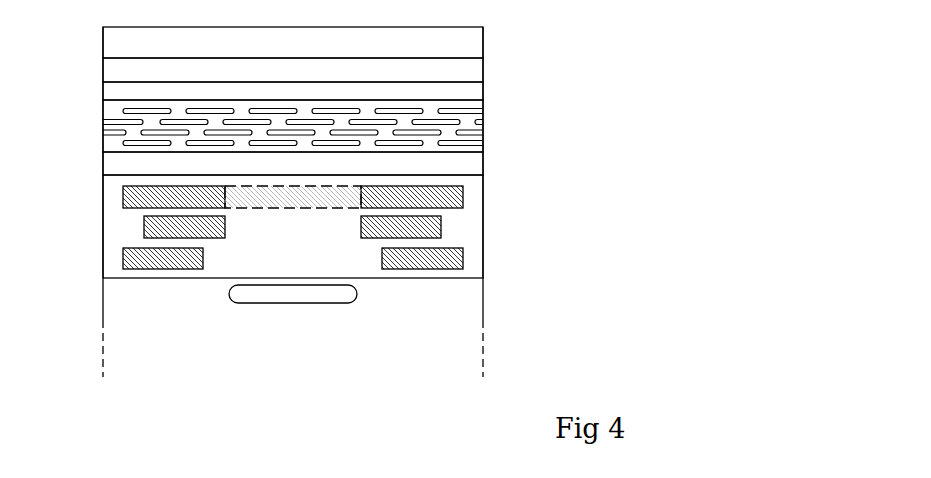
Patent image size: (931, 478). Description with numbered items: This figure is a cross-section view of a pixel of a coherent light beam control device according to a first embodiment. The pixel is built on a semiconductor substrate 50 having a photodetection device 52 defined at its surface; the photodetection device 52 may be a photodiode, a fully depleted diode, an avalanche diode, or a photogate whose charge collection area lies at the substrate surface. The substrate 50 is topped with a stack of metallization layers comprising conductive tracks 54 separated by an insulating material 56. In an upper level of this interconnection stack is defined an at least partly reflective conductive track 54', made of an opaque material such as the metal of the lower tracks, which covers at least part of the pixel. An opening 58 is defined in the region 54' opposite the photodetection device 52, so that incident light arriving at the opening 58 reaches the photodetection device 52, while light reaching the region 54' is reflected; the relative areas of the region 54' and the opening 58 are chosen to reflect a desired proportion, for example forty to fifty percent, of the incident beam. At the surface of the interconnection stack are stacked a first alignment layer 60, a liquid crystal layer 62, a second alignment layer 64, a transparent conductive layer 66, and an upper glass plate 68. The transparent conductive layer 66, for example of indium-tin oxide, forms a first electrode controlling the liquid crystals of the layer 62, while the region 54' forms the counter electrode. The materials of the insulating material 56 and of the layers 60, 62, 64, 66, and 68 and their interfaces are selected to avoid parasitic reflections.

The semiconductor substrate 50 is at (468, 333).
The photodetection device 52 is at (242, 294).
The conductive tracks 54 is at (289, 242).
The at least partly reflective conductive track 54' is at (329, 193).
The insulating material 56 is at (468, 222).
The opening 58 is at (240, 186).
The first alignment layer 60 is at (468, 169).
The liquid crystal layer 62 is at (468, 126).
The second alignment layer 64 is at (468, 92).
The transparent conductive layer 66 is at (468, 67).
The upper glass plate 68 is at (468, 42).